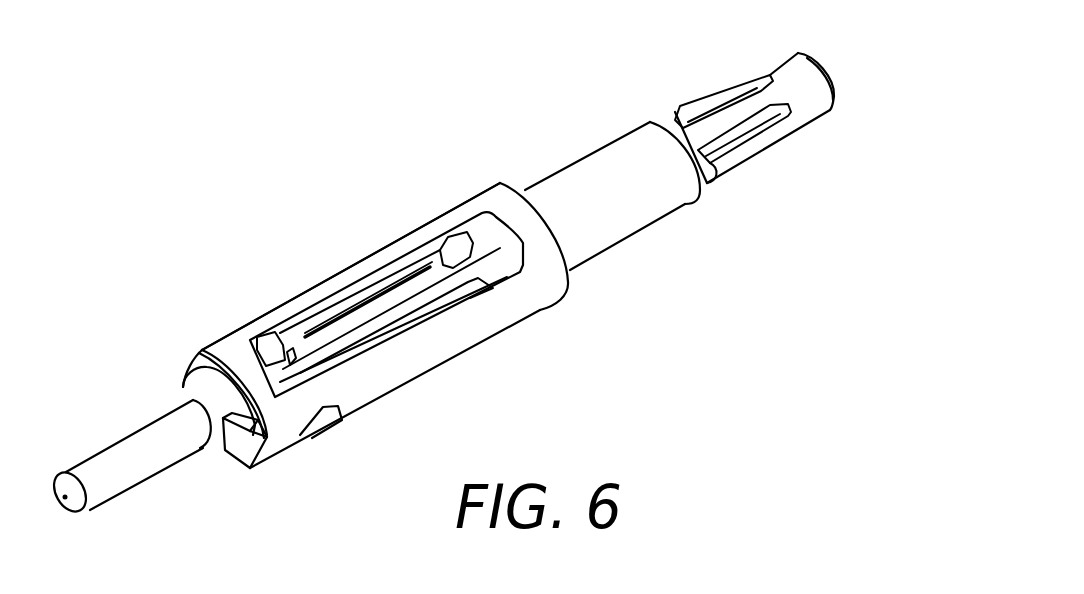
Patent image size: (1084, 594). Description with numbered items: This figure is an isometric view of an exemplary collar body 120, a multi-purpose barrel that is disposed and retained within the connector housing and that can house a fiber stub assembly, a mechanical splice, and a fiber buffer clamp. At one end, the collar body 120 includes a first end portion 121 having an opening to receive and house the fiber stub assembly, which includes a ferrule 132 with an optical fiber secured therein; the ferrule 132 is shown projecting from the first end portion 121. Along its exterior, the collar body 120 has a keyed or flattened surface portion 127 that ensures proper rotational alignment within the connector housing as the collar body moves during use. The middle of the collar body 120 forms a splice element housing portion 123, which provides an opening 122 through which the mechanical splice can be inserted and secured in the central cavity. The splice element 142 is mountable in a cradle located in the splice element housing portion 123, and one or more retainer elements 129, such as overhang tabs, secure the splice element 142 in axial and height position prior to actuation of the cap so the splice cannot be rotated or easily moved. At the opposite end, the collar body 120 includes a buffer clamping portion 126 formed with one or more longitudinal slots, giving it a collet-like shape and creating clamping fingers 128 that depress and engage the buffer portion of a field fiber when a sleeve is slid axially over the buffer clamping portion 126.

The collar body 120 is at (233, 166).
The first end portion 121 is at (195, 387).
The opening 122 is at (352, 300).
The splice element housing portion 123 is at (395, 252).
The buffer clamping portion 126 is at (810, 137).
The keyed or flattened surface portion 127 is at (290, 437).
The clamping fingers 128 is at (692, 100).
The retainer elements 129 is at (463, 243).
The ferrule 132 is at (125, 473).
The splice element 142 is at (413, 302).